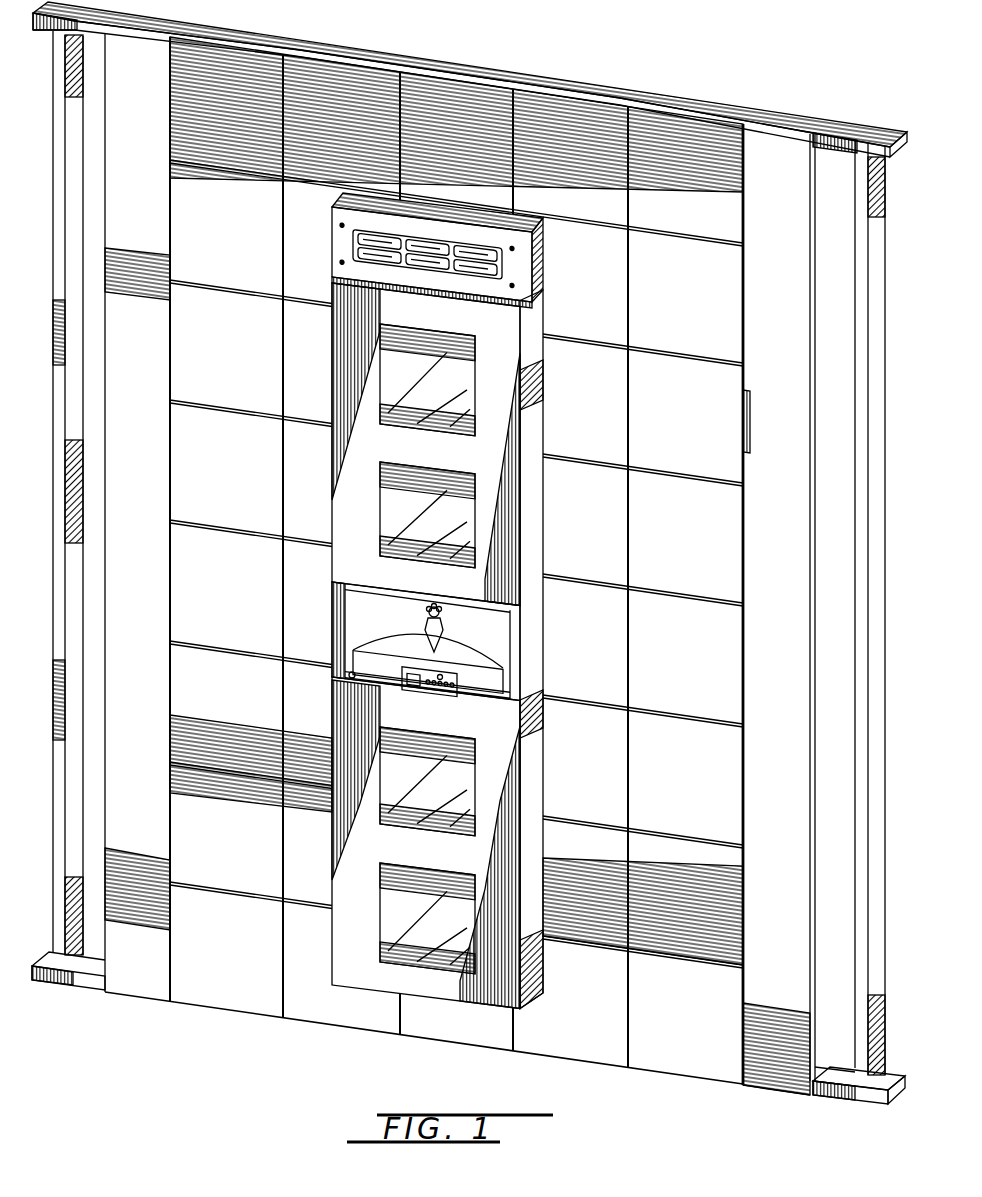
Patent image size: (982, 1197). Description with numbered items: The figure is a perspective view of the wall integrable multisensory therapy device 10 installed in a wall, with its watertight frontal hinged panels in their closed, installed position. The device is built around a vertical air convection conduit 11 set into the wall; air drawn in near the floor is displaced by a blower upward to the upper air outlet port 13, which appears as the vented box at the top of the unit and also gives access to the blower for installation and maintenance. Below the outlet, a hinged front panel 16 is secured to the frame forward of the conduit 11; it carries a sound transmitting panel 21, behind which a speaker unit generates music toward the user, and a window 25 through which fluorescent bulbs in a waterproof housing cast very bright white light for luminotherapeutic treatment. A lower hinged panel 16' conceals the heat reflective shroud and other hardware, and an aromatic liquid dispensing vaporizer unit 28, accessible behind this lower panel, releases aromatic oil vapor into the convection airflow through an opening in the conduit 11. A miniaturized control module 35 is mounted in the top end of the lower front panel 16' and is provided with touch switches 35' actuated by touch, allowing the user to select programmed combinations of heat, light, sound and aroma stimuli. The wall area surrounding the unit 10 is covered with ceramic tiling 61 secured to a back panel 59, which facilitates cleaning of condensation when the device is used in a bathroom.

The wall integrable multisensory therapy device 10 is at (408, 601).
The air convection conduit 11 is at (426, 643).
The upper air outlet port 13 is at (432, 257).
The front panel 16 is at (426, 444).
The lower hinged panel 16' is at (426, 842).
The sound transmitting panel 21 is at (427, 380).
The window 25 is at (427, 515).
The aromatic liquid dispensing vaporizer unit 28 is at (427, 677).
The control module 35 is at (288, 681).
The touch switches 35' is at (523, 724).
The back panel 59 is at (782, 1033).
The ceramic tiling 61 is at (582, 1027).